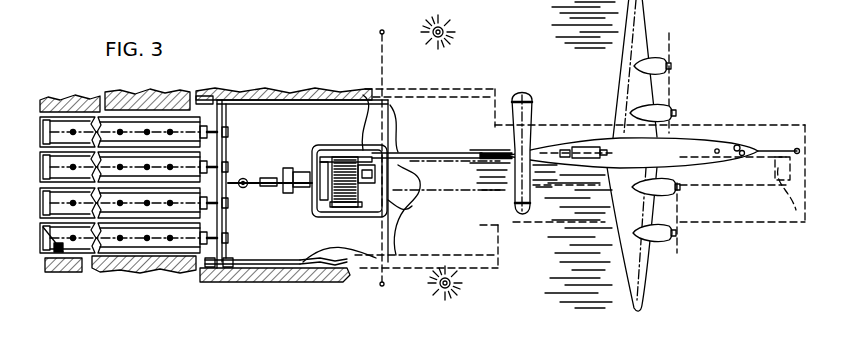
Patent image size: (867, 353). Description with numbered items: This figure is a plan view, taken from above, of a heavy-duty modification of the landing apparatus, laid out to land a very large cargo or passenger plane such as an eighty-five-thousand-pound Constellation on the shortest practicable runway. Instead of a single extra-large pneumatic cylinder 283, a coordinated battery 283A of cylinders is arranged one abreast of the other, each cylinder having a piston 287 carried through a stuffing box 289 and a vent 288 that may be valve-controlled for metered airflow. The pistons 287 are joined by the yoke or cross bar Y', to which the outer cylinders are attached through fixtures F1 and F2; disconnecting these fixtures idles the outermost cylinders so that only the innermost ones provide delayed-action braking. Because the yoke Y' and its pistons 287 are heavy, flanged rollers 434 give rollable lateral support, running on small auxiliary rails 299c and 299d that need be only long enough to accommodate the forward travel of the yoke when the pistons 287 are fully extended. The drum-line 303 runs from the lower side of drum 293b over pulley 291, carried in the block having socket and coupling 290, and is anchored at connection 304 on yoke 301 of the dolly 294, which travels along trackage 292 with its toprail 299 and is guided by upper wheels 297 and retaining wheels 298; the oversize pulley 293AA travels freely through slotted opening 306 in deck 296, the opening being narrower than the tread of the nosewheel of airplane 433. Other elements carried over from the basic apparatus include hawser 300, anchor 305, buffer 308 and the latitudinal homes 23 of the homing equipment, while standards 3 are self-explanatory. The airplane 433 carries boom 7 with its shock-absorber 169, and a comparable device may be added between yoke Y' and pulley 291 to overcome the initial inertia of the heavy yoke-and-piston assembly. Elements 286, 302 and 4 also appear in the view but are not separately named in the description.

The piston cap 286 is at (60, 128).
The vent 288 is at (147, 130).
The pneumatic cylinder 283 is at (133, 247).
The battery of cylinders 283A is at (112, 279).
The piston 287 is at (60, 271).
The stuffing box 289 is at (208, 262).
The flanged roller 434 is at (242, 110).
The auxiliary rail 299c is at (311, 95).
The oversize pulley 293AA is at (305, 92).
The hawser 300 is at (389, 102).
The deck 296 is at (359, 146).
The yoke 301 is at (321, 154).
The upper wheels 297 is at (281, 169).
The pulley 291 is at (277, 153).
The socket and coupling 290 is at (247, 187).
The fixture F1 is at (225, 120).
The yoke or cross bar Y' is at (242, 231).
The fixture F2 is at (226, 241).
The drum-line 303 is at (314, 193).
The anchor point 304 is at (312, 200).
The lower mounting wall 302 is at (303, 190).
The auxiliary rail 299d is at (349, 273).
The dolly 294 is at (367, 218).
The retaining wheels 298 is at (400, 152).
The model support shaft 4 is at (482, 152).
The slotted opening 306 is at (435, 156).
The toprail 299 is at (400, 190).
The drum 293b is at (395, 199).
The standards 3 is at (380, 32).
The latitudinal homes 23 is at (452, 31).
The airplane 433 is at (711, 136).
The shock-absorber 169 is at (588, 147).
The boom 7 is at (556, 161).
The anchor 305 is at (796, 148).
The track 292 is at (705, 184).
The buffer 308 is at (797, 215).